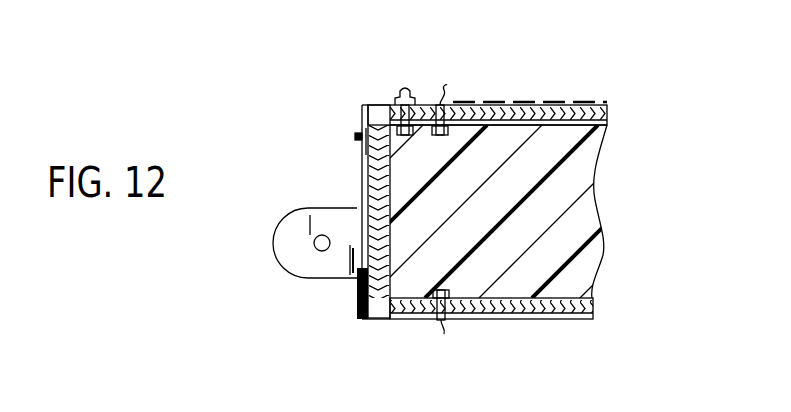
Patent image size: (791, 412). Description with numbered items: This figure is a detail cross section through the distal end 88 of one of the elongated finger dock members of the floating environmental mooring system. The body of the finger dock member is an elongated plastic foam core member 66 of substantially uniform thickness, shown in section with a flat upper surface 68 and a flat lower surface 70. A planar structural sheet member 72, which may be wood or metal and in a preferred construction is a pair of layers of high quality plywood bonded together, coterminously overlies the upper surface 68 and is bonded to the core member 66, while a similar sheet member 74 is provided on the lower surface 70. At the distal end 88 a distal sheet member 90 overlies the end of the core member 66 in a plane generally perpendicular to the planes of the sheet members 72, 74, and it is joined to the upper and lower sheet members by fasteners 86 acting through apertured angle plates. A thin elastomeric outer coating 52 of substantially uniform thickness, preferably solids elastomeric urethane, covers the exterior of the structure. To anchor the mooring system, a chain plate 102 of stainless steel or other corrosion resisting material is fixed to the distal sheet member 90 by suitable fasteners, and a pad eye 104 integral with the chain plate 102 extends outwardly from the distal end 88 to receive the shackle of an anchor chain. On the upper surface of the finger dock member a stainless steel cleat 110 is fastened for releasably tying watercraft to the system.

The elastomeric outer coating 52 is at (532, 101).
The plastic foam core member 66 is at (577, 168).
The upper surface 68 is at (487, 105).
The lower surface 70 is at (506, 321).
The planar structural sheet member 72 is at (570, 105).
The sheet member 74 is at (553, 321).
The fasteners 86 is at (440, 320).
The distal end 88 is at (334, 176).
The distal sheet member 90 is at (360, 158).
The chain plate 102 is at (357, 112).
The pad eye 104 is at (296, 272).
The cleats 110 is at (403, 87).